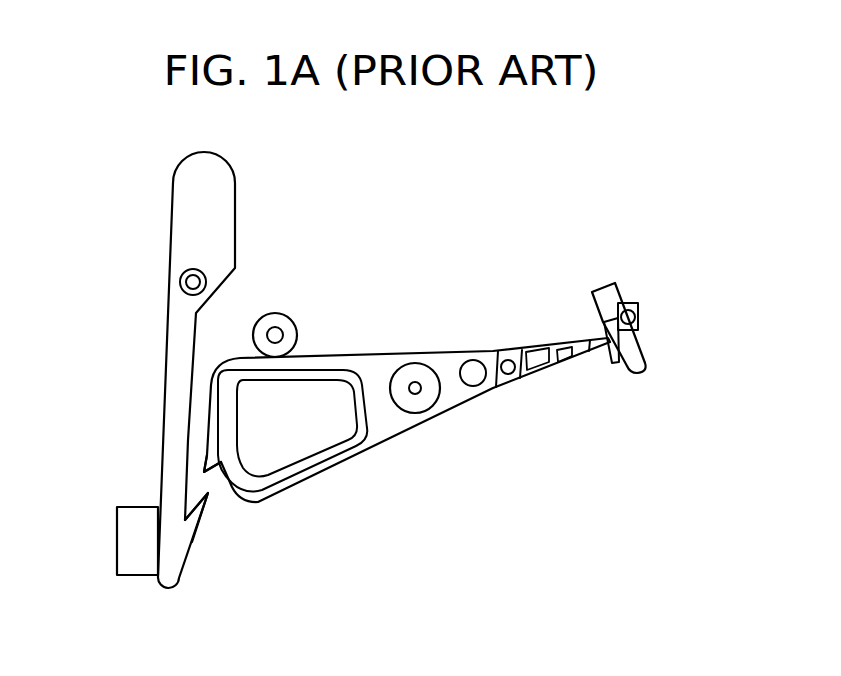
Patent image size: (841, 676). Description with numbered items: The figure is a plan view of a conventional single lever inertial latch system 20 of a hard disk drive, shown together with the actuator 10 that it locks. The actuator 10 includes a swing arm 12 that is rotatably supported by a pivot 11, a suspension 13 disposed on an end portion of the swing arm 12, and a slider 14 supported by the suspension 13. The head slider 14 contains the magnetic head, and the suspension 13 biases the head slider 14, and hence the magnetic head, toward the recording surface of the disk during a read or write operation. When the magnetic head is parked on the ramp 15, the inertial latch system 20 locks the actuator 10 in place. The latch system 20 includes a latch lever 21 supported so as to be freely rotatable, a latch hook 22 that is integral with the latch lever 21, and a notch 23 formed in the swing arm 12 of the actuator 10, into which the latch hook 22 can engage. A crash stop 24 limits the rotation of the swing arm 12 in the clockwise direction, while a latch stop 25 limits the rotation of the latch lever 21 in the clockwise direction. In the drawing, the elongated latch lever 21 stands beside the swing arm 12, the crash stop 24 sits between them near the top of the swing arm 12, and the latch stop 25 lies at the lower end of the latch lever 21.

The actuator 10 is at (451, 372).
The pivot 11 is at (412, 387).
The swing arm 12 is at (458, 405).
The suspension 13 is at (577, 355).
The slider 14 is at (608, 337).
The ramp 15 is at (643, 345).
The single lever inertial latch system 20 is at (205, 370).
The latch lever 21 is at (177, 343).
The latch hook 22 is at (198, 513).
The notch 23 is at (205, 468).
The crash stop 24 is at (288, 312).
The latch stop 25 is at (133, 510).